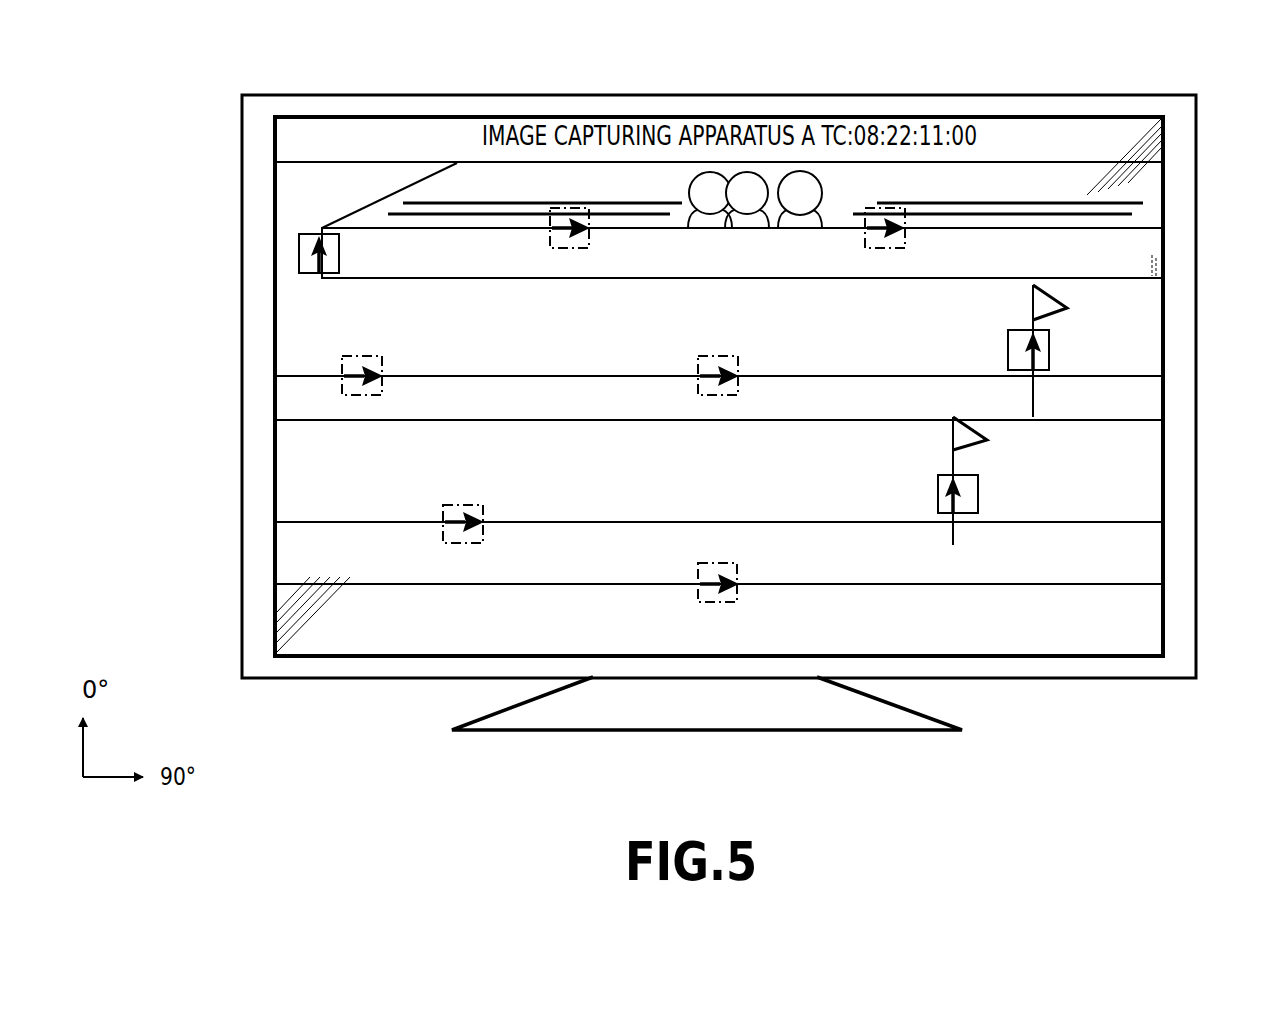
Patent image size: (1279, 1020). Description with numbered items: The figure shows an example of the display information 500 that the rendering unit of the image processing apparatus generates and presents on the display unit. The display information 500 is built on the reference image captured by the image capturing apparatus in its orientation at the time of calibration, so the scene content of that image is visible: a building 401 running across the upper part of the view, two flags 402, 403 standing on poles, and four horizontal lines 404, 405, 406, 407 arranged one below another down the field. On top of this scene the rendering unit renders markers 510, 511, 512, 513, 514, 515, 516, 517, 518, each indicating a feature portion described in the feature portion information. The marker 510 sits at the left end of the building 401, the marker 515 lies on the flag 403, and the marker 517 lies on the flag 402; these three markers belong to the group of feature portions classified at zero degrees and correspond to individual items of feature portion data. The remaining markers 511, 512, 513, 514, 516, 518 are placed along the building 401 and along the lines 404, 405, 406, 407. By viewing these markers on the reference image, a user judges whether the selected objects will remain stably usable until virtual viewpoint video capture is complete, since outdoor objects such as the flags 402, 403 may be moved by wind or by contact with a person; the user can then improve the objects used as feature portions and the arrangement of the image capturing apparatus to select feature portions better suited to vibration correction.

The display information 500 is at (275, 117).
The marker 510 is at (298, 250).
The building 401 is at (377, 226).
The marker 511 is at (570, 207).
The marker 512 is at (898, 207).
The marker 513 is at (340, 362).
The marker 514 is at (738, 392).
The marker 515 is at (1049, 335).
The marker 516 is at (458, 544).
The marker 517 is at (978, 515).
The marker 518 is at (705, 603).
The flag 402 is at (985, 440).
The flag 403 is at (1033, 392).
The line 404 is at (302, 377).
The line 405 is at (302, 421).
The line 406 is at (302, 523).
The line 407 is at (302, 585).